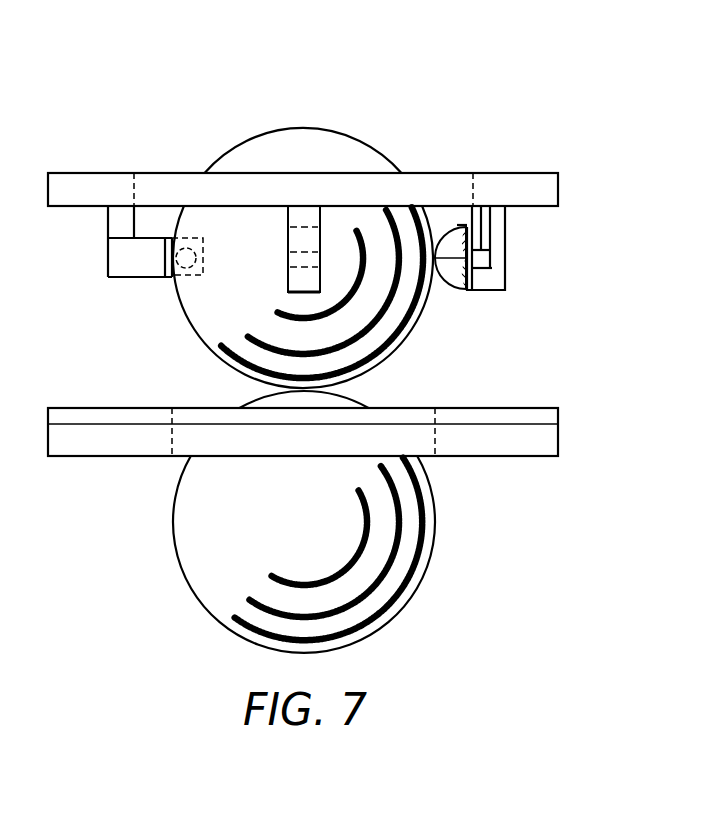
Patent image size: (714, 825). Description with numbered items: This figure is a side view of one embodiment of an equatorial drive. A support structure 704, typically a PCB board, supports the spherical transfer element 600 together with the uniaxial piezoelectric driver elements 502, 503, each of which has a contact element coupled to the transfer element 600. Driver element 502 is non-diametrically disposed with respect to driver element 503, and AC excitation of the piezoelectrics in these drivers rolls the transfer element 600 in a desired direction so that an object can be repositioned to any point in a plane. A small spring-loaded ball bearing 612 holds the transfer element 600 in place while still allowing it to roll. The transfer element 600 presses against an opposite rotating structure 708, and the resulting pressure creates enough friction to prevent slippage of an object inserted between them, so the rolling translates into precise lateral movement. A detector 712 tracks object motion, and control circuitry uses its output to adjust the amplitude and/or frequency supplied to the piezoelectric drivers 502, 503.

The support structure 704 is at (122, 173).
The spherical transfer element 600 is at (381, 134).
The uniaxial piezoelectric driver element 502 is at (288, 240).
The spring-loaded ball bearing 612 is at (157, 287).
The uniaxial piezoelectric driver element 503 is at (473, 303).
The detector 712 is at (518, 407).
The rotating structure 708 is at (400, 600).